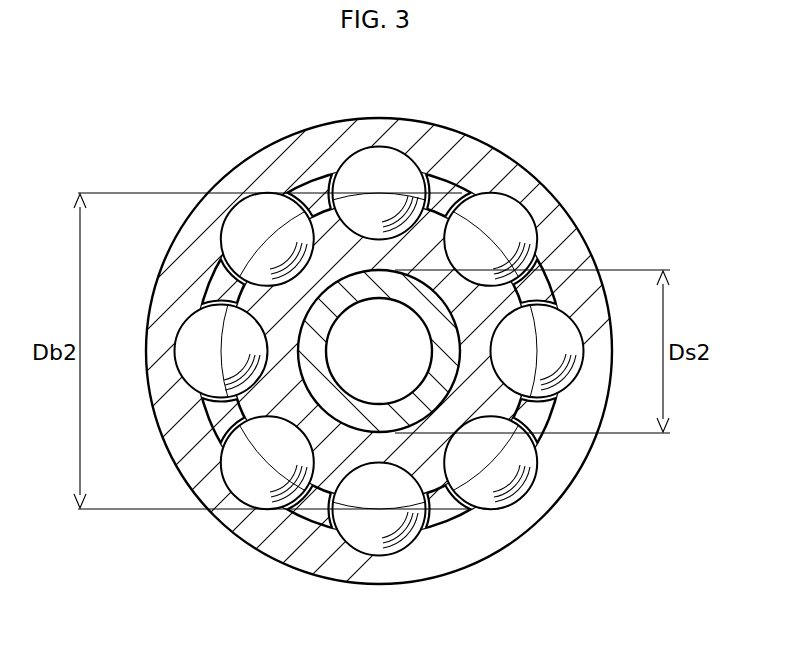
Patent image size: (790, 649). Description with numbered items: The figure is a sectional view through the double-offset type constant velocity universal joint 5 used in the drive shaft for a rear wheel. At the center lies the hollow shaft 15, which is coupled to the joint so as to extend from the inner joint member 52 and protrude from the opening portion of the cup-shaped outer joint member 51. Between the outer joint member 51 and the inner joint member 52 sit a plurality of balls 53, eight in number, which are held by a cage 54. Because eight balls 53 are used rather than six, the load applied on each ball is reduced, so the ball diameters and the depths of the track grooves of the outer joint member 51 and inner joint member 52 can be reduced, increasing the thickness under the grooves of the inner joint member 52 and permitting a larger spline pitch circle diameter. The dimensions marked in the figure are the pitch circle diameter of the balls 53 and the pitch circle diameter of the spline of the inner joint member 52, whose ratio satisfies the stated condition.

The double-offset type constant velocity universal joint 5 is at (374, 324).
The hollow shaft 15 is at (430, 281).
The outer joint member 51 is at (489, 141).
The inner joint member 52 is at (433, 507).
The balls 53 is at (375, 162).
The cage 54 is at (213, 424).